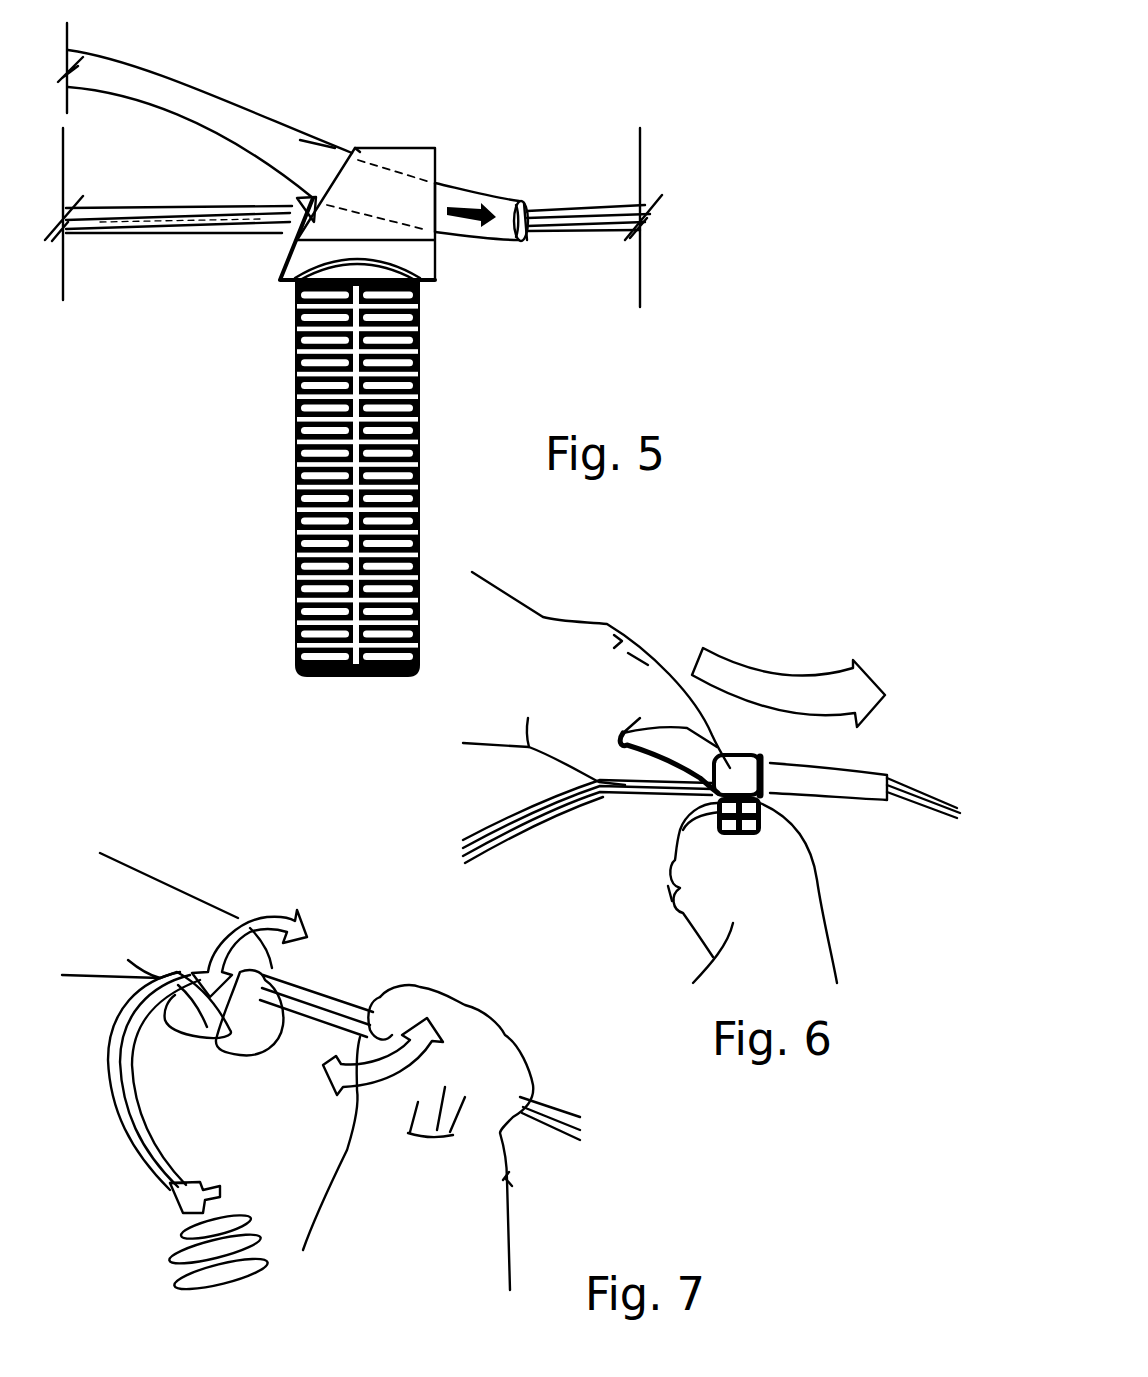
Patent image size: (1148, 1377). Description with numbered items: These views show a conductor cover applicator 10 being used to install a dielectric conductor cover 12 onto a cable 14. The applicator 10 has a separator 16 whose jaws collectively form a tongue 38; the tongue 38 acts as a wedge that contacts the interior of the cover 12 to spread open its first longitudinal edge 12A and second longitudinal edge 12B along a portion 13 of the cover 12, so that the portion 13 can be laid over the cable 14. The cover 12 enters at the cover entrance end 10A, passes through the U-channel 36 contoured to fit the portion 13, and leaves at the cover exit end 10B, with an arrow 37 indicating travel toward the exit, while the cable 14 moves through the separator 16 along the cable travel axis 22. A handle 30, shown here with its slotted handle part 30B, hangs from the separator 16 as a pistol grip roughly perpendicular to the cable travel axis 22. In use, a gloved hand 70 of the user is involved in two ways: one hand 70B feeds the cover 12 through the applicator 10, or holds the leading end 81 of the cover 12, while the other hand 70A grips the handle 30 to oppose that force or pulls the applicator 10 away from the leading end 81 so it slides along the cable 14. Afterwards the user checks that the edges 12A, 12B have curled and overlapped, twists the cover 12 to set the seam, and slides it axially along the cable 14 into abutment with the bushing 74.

In FIG. 5, the applicator 10 is at (437, 112).
In FIG. 5, the cover entrance end 10A is at (278, 196).
In FIG. 5, the cover exit end 10B is at (452, 172).
In FIG. 5, the dielectric conductor cover 12 is at (157, 72).
In FIG. 6, the dielectric conductor cover 12 is at (830, 793).
In FIG. 7, the dielectric conductor cover 12 is at (107, 1054).
In FIG. 5, the first longitudinal edge 12A is at (523, 243).
In FIG. 7, the first longitudinal edge 12A is at (145, 1132).
In FIG. 5, the second longitudinal edge 12B is at (526, 242).
In FIG. 5, the portion of the conductor cover 13 is at (403, 174).
In FIG. 5, the cable 14 is at (553, 237).
In FIG. 6, the cable 14 is at (957, 812).
In FIG. 5, the separator 16 is at (328, 145).
In FIG. 5, the cable travel axis 22 is at (128, 222).
In FIG. 5, the handle 30 is at (293, 428).
In FIG. 6, the handle 30 is at (717, 797).
In FIG. 5, the handle part 30B is at (295, 479).
In FIG. 6, the U-channel 36 is at (765, 782).
In FIG. 5, the direction arrow 37 is at (467, 207).
In FIG. 5, the tongue 38 is at (354, 142).
In FIG. 6, the hand 70 is at (703, 890).
In FIG. 7, the hand 70 is at (493, 1183).
In FIG. 6, the other hand 70A is at (812, 912).
In FIG. 7, the other hand 70A is at (490, 1233).
In FIG. 6, the user's hand 70B is at (627, 642).
In FIG. 7, the user's hand 70B is at (173, 903).
In FIG. 7, the bushing 74 is at (170, 1252).
In FIG. 6, the leading end 81 is at (877, 777).